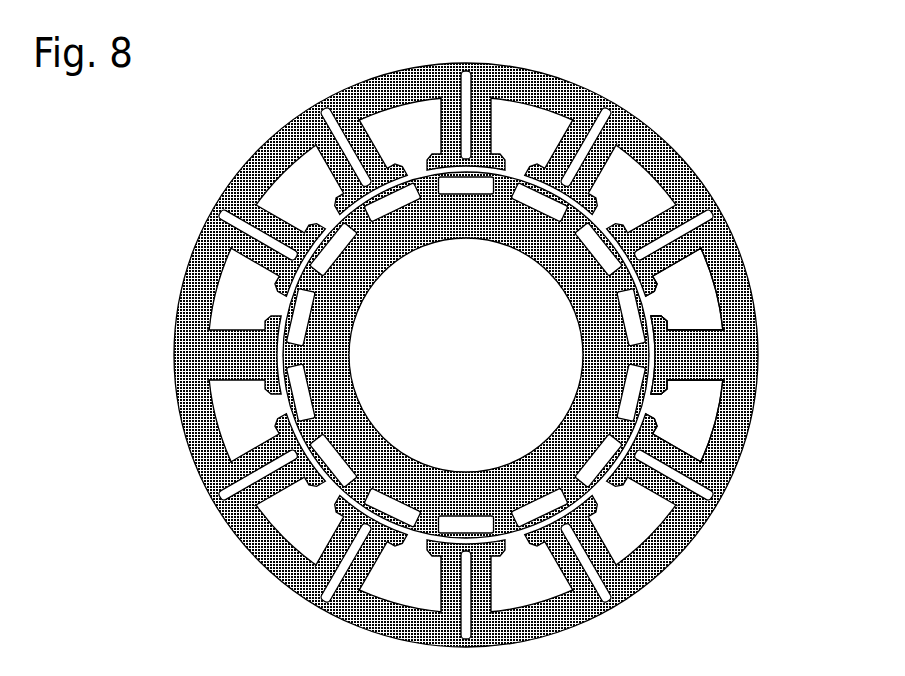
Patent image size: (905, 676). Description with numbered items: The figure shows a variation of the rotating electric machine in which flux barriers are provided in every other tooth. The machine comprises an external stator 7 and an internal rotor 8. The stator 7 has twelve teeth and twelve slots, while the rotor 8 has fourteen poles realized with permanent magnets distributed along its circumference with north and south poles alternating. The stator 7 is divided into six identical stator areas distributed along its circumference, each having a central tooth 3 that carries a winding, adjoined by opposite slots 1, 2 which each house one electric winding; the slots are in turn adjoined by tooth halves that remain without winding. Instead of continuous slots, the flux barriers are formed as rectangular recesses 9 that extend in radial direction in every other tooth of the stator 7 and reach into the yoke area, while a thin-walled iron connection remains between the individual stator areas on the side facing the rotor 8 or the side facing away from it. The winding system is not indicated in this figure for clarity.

The slot 1 is at (688, 303).
The slot 2 is at (705, 418).
The tooth 3 is at (703, 363).
The stator 7 is at (275, 150).
The rotor 8 is at (339, 358).
The rectangular recess 9 is at (465, 102).